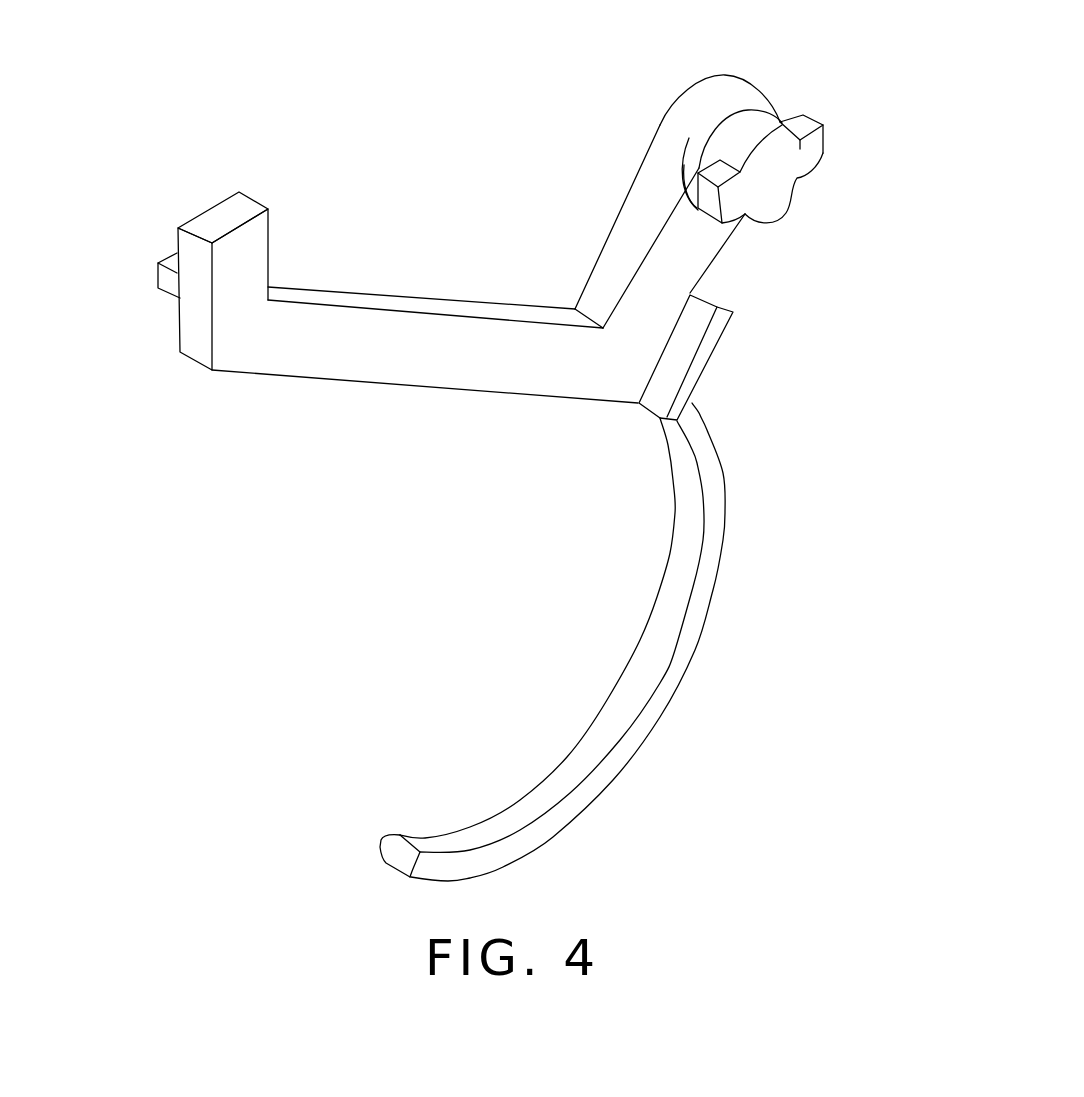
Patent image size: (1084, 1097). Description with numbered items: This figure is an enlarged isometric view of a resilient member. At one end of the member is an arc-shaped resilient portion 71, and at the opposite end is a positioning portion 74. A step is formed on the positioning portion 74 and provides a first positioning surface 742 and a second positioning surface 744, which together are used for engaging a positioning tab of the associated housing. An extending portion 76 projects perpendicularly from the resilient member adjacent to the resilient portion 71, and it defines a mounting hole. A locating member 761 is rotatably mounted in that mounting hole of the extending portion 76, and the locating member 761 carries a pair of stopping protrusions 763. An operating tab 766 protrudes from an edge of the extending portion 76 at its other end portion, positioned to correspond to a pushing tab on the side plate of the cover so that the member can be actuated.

The resilient portion 71 is at (542, 803).
The positioning portion 74 is at (257, 256).
The first positioning surface 742 is at (212, 222).
The second positioning surface 744 is at (170, 263).
The extending portion 76 is at (677, 257).
The locating member 761 is at (767, 174).
The stopping protrusion 763 is at (798, 125).
The operating tab 766 is at (692, 345).